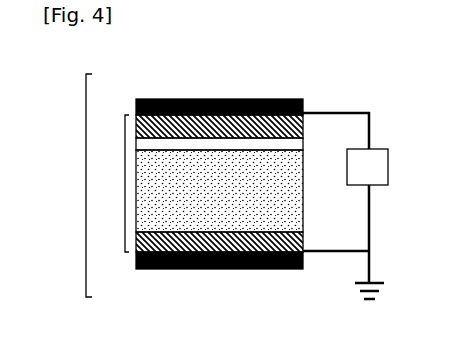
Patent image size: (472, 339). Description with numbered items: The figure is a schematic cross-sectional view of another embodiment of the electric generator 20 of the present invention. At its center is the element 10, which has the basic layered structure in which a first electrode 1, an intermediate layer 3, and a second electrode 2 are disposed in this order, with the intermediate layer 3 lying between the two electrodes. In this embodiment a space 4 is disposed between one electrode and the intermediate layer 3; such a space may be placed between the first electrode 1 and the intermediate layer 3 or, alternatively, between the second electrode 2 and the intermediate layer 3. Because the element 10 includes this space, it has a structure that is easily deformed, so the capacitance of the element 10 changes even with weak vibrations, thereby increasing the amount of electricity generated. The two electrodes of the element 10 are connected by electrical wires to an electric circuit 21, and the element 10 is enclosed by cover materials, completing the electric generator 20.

The first electrode 1 is at (311, 113).
The second electrode 2 is at (307, 254).
The intermediate layer 3 is at (305, 151).
The space 4 is at (297, 143).
The element 10 is at (125, 185).
The electric generator 20 is at (86, 185).
The electric circuit 21 is at (385, 163).